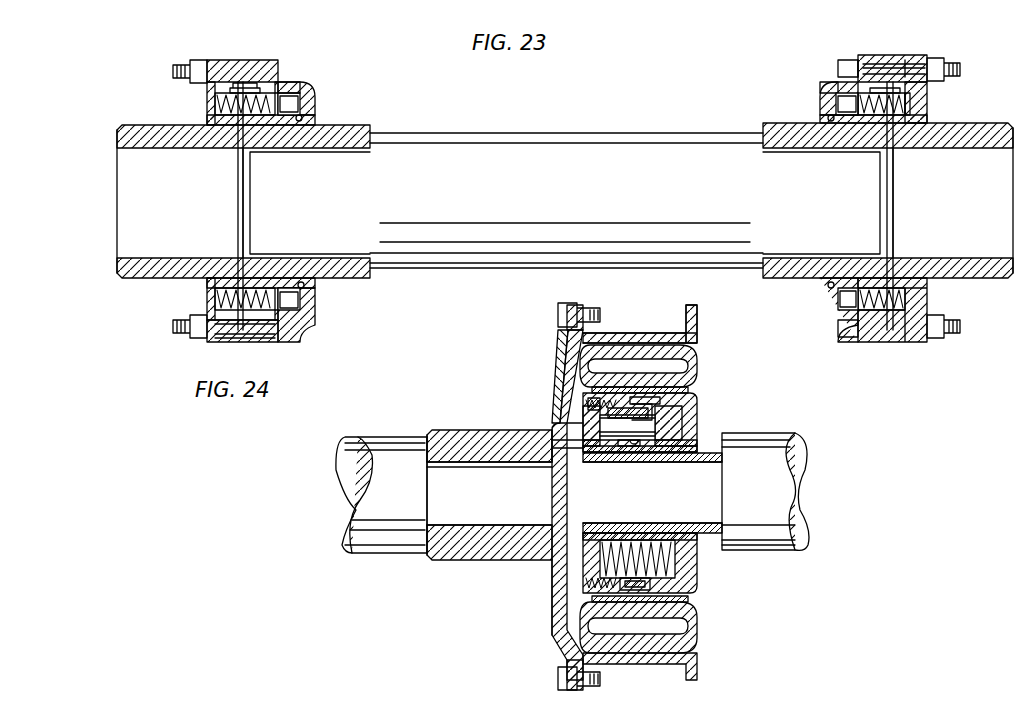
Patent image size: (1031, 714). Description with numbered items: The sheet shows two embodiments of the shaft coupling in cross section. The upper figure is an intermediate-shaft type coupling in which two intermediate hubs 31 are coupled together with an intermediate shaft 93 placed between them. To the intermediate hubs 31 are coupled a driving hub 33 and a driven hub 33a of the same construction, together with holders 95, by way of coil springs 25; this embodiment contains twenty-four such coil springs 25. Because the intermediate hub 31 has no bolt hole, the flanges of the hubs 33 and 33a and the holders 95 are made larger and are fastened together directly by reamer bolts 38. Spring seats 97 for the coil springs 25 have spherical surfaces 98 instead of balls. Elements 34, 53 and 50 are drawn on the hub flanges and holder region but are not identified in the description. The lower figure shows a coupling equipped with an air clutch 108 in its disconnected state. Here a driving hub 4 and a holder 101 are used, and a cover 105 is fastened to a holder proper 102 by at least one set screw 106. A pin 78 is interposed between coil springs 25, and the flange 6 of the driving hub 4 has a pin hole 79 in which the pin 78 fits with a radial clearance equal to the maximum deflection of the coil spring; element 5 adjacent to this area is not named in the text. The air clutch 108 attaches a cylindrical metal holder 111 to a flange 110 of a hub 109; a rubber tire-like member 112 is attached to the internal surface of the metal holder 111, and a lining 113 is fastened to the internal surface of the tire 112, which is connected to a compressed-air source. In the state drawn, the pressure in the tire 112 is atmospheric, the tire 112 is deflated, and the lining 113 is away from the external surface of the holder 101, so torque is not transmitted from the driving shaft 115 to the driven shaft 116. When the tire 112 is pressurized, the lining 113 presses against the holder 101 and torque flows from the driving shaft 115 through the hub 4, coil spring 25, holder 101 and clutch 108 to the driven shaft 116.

In FIG. 23, the driving hub 33 is at (165, 135).
In FIG. 23, the driven hub 33a is at (990, 133).
In FIG. 23, the intermediate hub 31 is at (345, 135).
In FIG. 23, the flange 34 is at (222, 62).
In FIG. 23, the reamer bolt 38 is at (300, 327).
In FIG. 23, the coil spring 25 is at (232, 92).
In FIG. 24, the coil spring 25 is at (690, 575).
In FIG. 23, the spherical surface 98 is at (300, 84).
In FIG. 23, the holder 95 is at (308, 90).
In FIG. 23, the spring seat 97 is at (282, 128).
In FIG. 23, the intermediate shaft 93 is at (563, 132).
In FIG. 23, the flange 53 is at (900, 70).
In FIG. 23, the plate 50 is at (912, 102).
In FIG. 24, the air clutch 108 is at (605, 312).
In FIG. 24, the flange 6 is at (640, 396).
In FIG. 24, the flange 110 is at (562, 360).
In FIG. 24, the cylindrical metal holder 111 is at (652, 333).
In FIG. 24, the rubber tire-like member 112 is at (690, 358).
In FIG. 24, the lining 113 is at (565, 382).
In FIG. 24, the pin 78 is at (672, 418).
In FIG. 24, the holder 101 is at (698, 394).
In FIG. 24, the set screw 106 is at (565, 412).
In FIG. 24, the holder proper 102 is at (697, 412).
In FIG. 24, the cover 105 is at (560, 440).
In FIG. 24, the driving hub 4 is at (713, 452).
In FIG. 24, the hub 109 is at (456, 432).
In FIG. 24, the driven shaft 116 is at (382, 444).
In FIG. 24, the driving shaft 115 is at (784, 445).
In FIG. 24, the pin hole 79 is at (637, 446).
In FIG. 24, the ring 5 is at (662, 452).